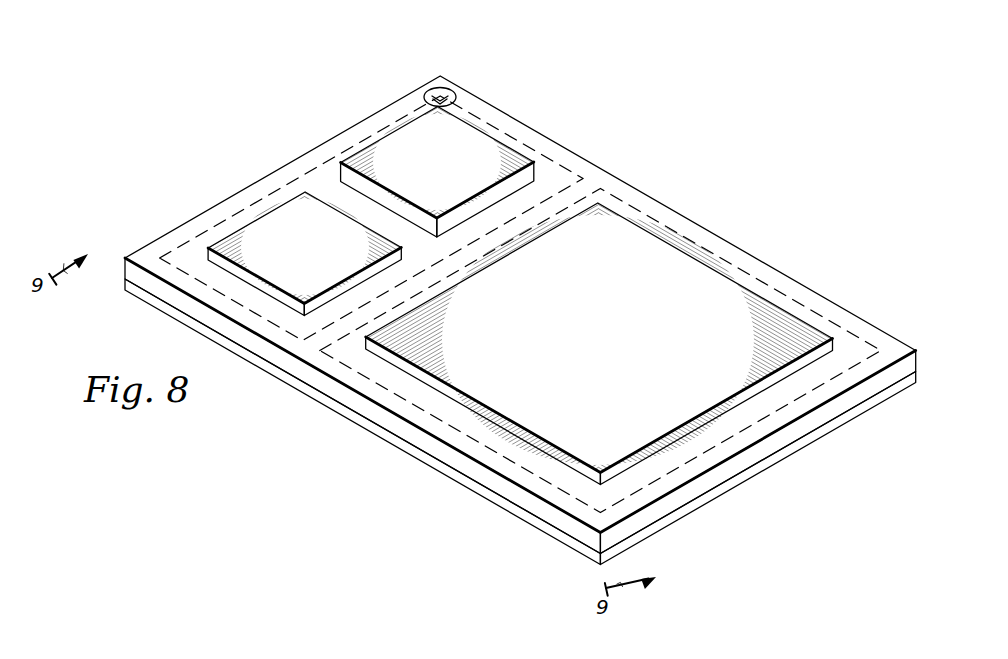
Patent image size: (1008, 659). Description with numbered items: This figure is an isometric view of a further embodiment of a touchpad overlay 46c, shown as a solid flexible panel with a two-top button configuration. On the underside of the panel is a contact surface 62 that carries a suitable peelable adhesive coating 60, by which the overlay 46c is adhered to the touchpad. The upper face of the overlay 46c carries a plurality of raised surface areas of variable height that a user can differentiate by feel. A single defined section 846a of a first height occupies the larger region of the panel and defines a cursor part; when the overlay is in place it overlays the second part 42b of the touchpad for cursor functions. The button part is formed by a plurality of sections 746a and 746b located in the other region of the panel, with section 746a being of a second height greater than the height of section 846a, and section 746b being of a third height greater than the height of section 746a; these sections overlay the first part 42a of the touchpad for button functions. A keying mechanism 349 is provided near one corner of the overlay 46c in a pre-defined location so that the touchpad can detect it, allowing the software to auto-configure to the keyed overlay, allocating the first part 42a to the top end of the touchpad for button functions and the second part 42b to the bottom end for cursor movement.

The overlay 46c is at (723, 240).
The contact surface 62 is at (438, 462).
The peelable adhesive coating 60 is at (521, 517).
The first part 42a is at (520, 144).
The second part 42b is at (810, 306).
The keying mechanism 349 is at (447, 88).
The section 746a is at (288, 217).
The section 746b is at (407, 140).
The single defined section 846a is at (621, 235).